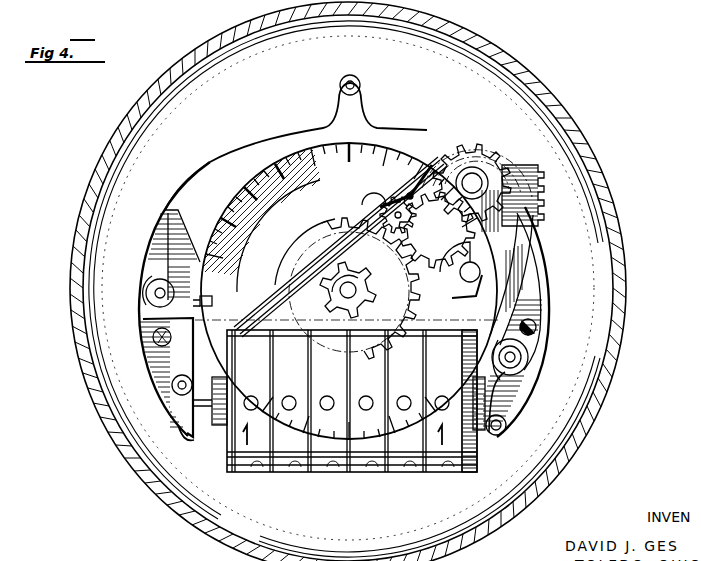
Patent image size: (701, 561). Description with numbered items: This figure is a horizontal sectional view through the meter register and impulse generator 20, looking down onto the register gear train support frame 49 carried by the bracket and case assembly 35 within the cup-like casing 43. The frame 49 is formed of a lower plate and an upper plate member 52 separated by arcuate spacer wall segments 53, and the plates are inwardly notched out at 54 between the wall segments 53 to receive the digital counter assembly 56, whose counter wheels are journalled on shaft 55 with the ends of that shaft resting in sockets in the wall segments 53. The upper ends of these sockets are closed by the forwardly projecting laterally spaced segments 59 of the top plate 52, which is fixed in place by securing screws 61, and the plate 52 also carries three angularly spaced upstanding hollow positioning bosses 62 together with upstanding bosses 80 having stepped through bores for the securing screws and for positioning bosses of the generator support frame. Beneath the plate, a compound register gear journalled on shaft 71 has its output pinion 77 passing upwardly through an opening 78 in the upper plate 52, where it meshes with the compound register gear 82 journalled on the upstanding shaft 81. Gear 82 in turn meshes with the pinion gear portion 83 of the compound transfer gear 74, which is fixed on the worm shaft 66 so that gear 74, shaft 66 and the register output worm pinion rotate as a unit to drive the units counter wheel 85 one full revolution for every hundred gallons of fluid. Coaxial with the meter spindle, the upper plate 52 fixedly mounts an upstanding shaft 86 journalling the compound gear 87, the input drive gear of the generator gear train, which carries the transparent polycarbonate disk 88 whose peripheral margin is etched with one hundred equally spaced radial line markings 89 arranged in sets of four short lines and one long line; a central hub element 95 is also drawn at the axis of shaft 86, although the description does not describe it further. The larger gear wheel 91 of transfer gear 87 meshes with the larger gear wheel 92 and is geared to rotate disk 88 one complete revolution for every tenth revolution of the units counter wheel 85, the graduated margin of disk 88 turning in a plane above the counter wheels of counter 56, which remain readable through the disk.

The meter register and impulse generator 20 is at (560, 98).
The bracket and case assembly 35 is at (620, 322).
The cup-like casing 43 is at (458, 27).
The register gear train support frame 49 is at (176, 182).
The upper plate member 52 is at (245, 145).
The arcuate spacer wall segments 53 is at (205, 306).
The notch 54 is at (215, 420).
The shaft 55 is at (182, 434).
The digital counter assembly 56 is at (345, 474).
The forwardly projecting laterally spaced segments 59 is at (150, 366).
The securing screws 61 is at (154, 338).
The upstanding hollow positioning bosses 62 is at (360, 84).
The worm shaft 66 is at (480, 268).
The journal shaft 71 is at (380, 212).
The compound transfer gear 74 is at (545, 272).
The output pinion 77 is at (372, 198).
The opening 78 is at (398, 178).
The upstanding bosses 80 is at (150, 300).
The upstanding shaft 81 is at (470, 170).
The compound register gear 82 is at (540, 196).
The pinion gear portion 83 is at (447, 262).
The units counter wheel 85 is at (465, 472).
The upstanding shaft 86 is at (368, 262).
The compound gear 87 is at (291, 251).
The transparent disk 88 is at (222, 226).
The line markings 89 is at (250, 180).
The larger gear wheel 91 is at (312, 240).
The larger gear wheel 92 is at (532, 238).
The hub 95 is at (350, 280).